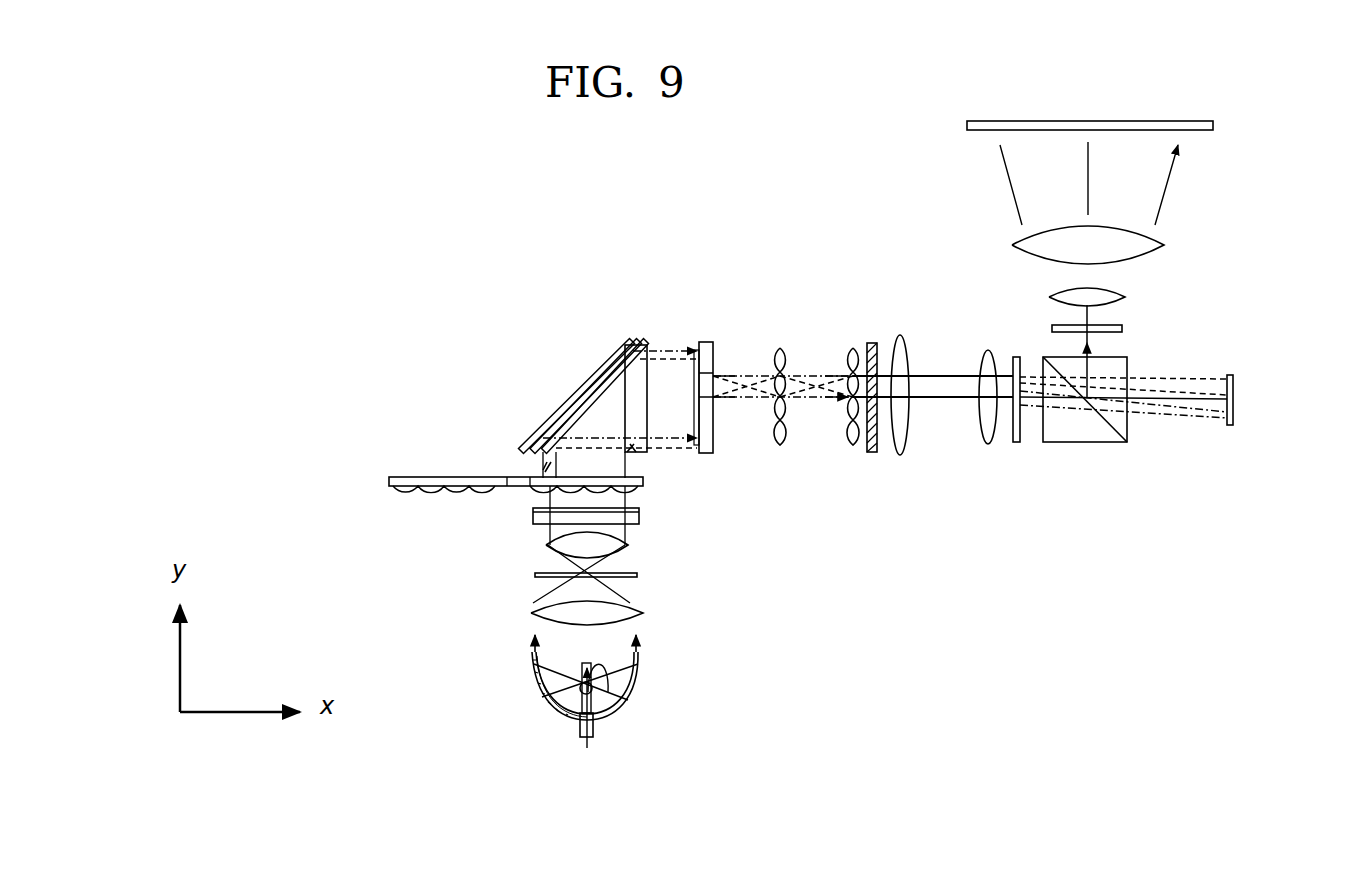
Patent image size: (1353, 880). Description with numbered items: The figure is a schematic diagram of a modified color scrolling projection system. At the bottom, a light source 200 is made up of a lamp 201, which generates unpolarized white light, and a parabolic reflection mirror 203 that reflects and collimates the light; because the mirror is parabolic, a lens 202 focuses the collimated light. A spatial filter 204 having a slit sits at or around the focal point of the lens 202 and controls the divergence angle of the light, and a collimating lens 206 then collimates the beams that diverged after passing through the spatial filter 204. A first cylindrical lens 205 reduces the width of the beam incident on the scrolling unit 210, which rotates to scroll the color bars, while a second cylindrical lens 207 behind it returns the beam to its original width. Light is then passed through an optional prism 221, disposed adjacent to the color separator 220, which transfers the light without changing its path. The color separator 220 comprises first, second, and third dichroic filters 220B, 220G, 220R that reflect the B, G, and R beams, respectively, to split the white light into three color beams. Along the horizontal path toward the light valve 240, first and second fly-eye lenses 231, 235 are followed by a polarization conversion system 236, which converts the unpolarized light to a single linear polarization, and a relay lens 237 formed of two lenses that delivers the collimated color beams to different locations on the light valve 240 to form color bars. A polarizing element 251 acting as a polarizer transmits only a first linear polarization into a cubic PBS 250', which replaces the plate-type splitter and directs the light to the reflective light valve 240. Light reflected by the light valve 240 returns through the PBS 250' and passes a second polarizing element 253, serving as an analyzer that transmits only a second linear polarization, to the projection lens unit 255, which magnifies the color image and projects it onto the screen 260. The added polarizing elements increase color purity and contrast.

The light source 200 is at (650, 688).
The lamp 201 is at (558, 702).
The lens 202 is at (643, 613).
The reflection mirror 203 is at (613, 705).
The spatial filter 204 is at (637, 575).
The first cylindrical lens 205 is at (639, 515).
The collimating lens 206 is at (628, 545).
The second cylindrical lens 207 is at (708, 342).
The scrolling unit 210 is at (645, 481).
The color separator 220 is at (581, 349).
The third dichroic filter 220R is at (578, 393).
The second dichroic filter 220G is at (590, 387).
The first dichroic filter 220B is at (603, 370).
The prism 221 is at (643, 395).
The first fly-eye lens 231 is at (780, 348).
The second fly-eye lens 235 is at (853, 348).
The polarization conversion system 236 is at (873, 452).
The relay lens 237 is at (900, 455).
The light valve 240 is at (1230, 375).
The cubic PBS 250' is at (1097, 432).
The polarizing element 251 is at (1016, 442).
The polarizing element 253 is at (1122, 328).
The projection lens unit 255 is at (1000, 232).
The screen 260 is at (1213, 127).